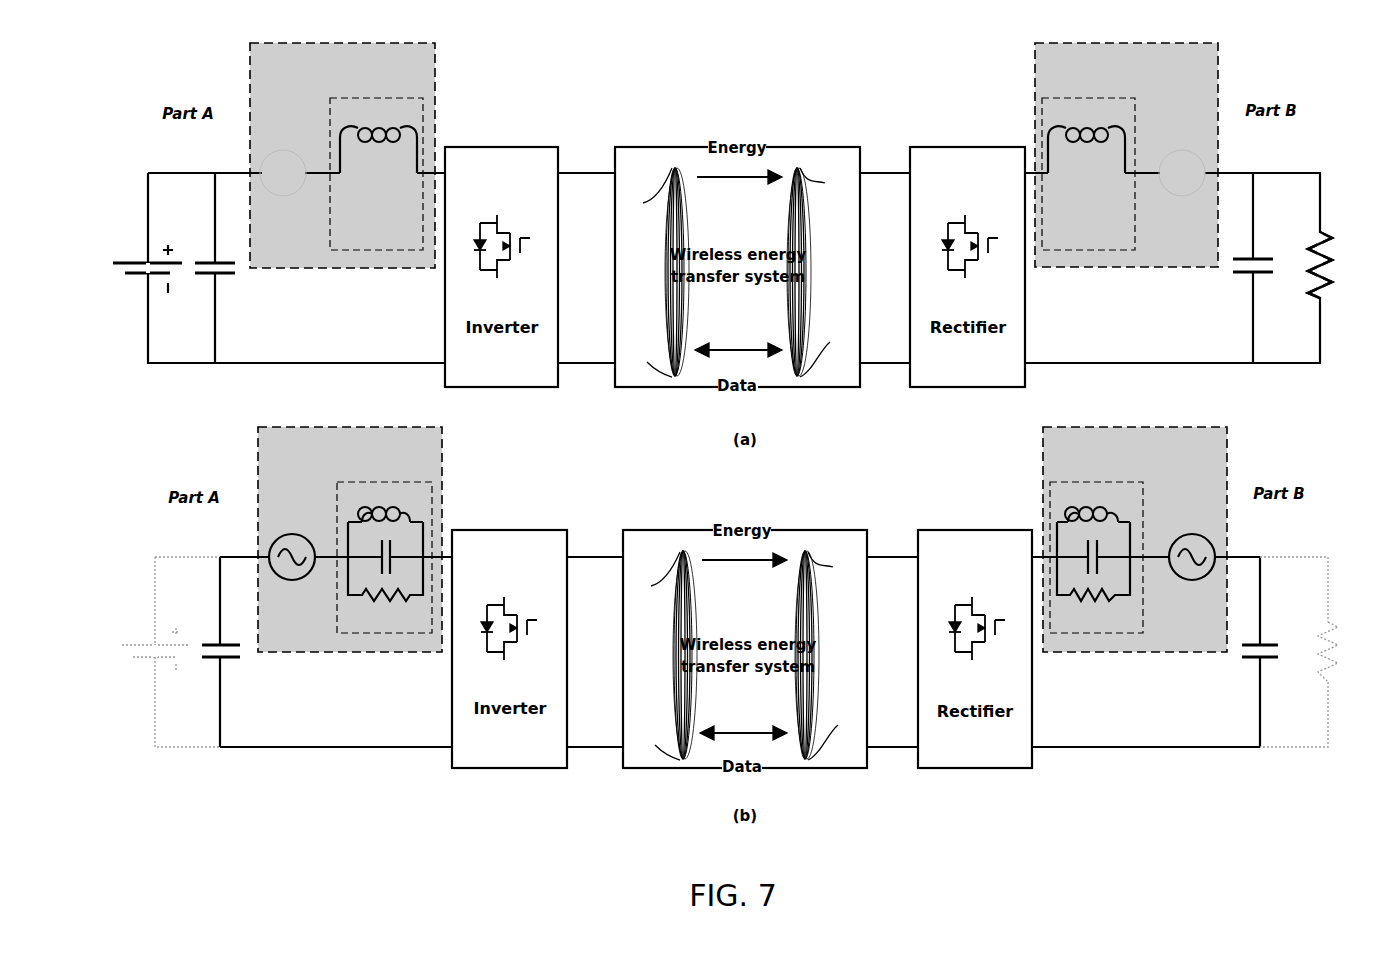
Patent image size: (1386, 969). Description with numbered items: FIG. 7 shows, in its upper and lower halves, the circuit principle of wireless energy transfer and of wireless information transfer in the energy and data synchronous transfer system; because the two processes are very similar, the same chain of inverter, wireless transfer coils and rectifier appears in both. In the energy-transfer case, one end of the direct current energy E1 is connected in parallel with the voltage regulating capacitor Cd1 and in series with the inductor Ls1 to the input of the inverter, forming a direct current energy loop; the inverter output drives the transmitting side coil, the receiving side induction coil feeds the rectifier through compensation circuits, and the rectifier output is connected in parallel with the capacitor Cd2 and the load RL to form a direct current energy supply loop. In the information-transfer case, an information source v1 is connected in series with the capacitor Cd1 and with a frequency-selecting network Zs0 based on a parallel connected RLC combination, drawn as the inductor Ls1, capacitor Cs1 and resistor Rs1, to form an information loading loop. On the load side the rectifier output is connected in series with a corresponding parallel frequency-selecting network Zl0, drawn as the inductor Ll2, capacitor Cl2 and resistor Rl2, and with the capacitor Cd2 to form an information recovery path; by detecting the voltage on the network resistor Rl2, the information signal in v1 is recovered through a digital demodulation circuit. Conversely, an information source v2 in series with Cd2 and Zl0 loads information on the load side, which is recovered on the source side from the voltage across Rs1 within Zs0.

The direct current energy E1 is at (153, 496).
The voltage regulating capacitor Cd1 is at (233, 460).
The frequency-selecting network Zs0 is at (346, 347).
The inductor Ls1 is at (381, 313).
The source-side capacitor Cs1 is at (385, 363).
The resistor of source-side frequency-selecting network Rs1 is at (385, 429).
The information source v1 is at (284, 345).
The frequency-selecting network Zl0 is at (1131, 347).
The load-side inductor Ll2 is at (1089, 313).
The load-side capacitor Cl2 is at (1093, 362).
The resistor of load-side frequency-selecting network Rl2 is at (1093, 429).
The information source v2 is at (1195, 343).
The capacitor Cd2 is at (1242, 460).
The load RL is at (1321, 489).